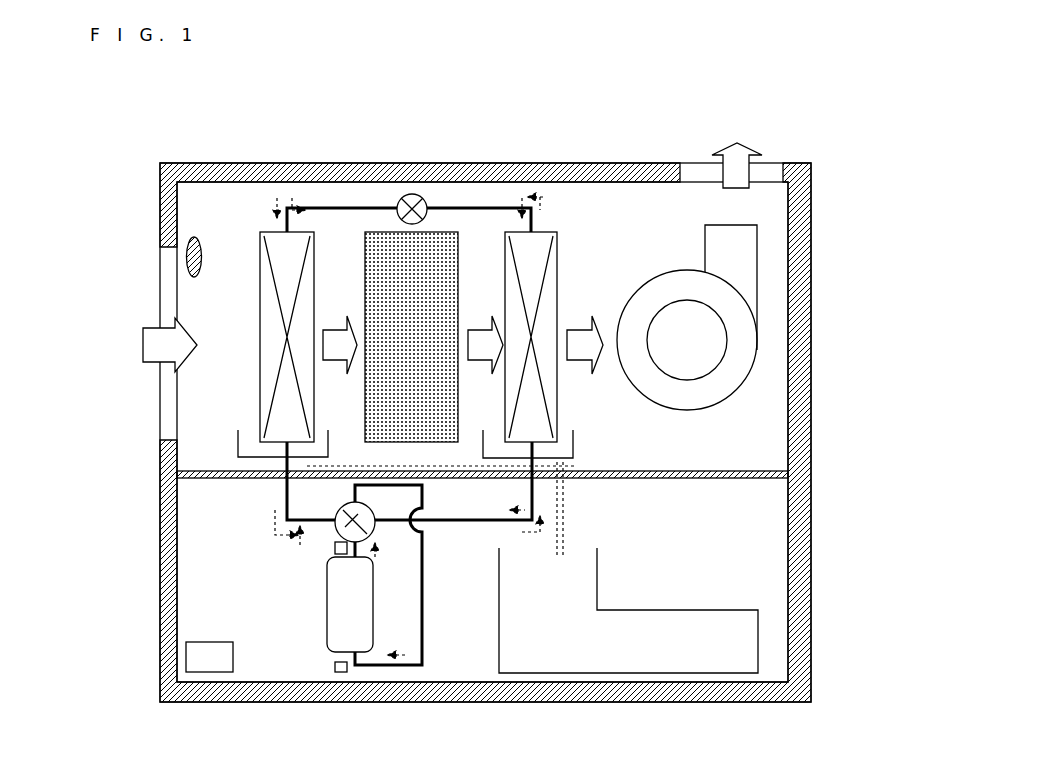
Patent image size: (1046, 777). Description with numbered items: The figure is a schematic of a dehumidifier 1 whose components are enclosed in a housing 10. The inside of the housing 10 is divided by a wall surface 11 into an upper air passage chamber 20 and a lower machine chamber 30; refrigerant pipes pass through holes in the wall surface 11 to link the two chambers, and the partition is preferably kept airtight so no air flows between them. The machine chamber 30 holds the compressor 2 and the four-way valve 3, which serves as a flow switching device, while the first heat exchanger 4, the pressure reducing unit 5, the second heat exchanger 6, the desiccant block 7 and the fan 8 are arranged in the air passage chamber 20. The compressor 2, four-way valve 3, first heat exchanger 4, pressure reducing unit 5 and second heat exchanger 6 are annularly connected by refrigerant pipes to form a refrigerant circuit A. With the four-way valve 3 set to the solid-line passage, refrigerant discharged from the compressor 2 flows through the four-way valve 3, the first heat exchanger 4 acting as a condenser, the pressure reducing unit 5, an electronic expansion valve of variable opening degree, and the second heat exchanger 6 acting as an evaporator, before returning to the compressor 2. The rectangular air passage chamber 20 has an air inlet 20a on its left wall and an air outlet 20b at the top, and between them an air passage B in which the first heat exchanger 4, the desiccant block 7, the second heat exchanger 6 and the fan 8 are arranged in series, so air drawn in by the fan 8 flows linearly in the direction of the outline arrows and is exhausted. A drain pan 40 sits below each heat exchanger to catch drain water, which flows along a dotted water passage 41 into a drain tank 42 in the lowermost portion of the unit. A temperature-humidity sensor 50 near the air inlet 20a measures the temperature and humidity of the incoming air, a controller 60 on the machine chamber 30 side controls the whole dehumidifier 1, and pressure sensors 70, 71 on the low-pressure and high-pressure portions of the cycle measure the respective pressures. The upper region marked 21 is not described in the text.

The dehumidifier 1 is at (533, 393).
The compressor 2 is at (323, 595).
The four-way valve 3 is at (332, 536).
The first heat exchanger 4 is at (257, 270).
The pressure reducing unit 5 is at (400, 196).
The second heat exchanger 6 is at (560, 290).
The desiccant block 7 is at (445, 232).
The fan 8 is at (757, 350).
The housing 10 is at (812, 212).
The wall surface 11 is at (745, 472).
The air passage chamber 20 is at (761, 317).
The air inlet 20a is at (160, 402).
The air outlet 20b is at (697, 165).
The air passage chamber 21 is at (197, 192).
The machine chamber 30 is at (750, 577).
The drain pan 40 is at (574, 446).
The water passage 41 is at (565, 535).
The drain tank 42 is at (598, 610).
The temperature-humidity sensor 50 is at (188, 255).
The controller 60 is at (216, 668).
The pressure sensor 70 is at (335, 552).
The pressure sensor 71 is at (347, 672).
The refrigerant circuit A is at (423, 630).
The air passage B is at (160, 192).